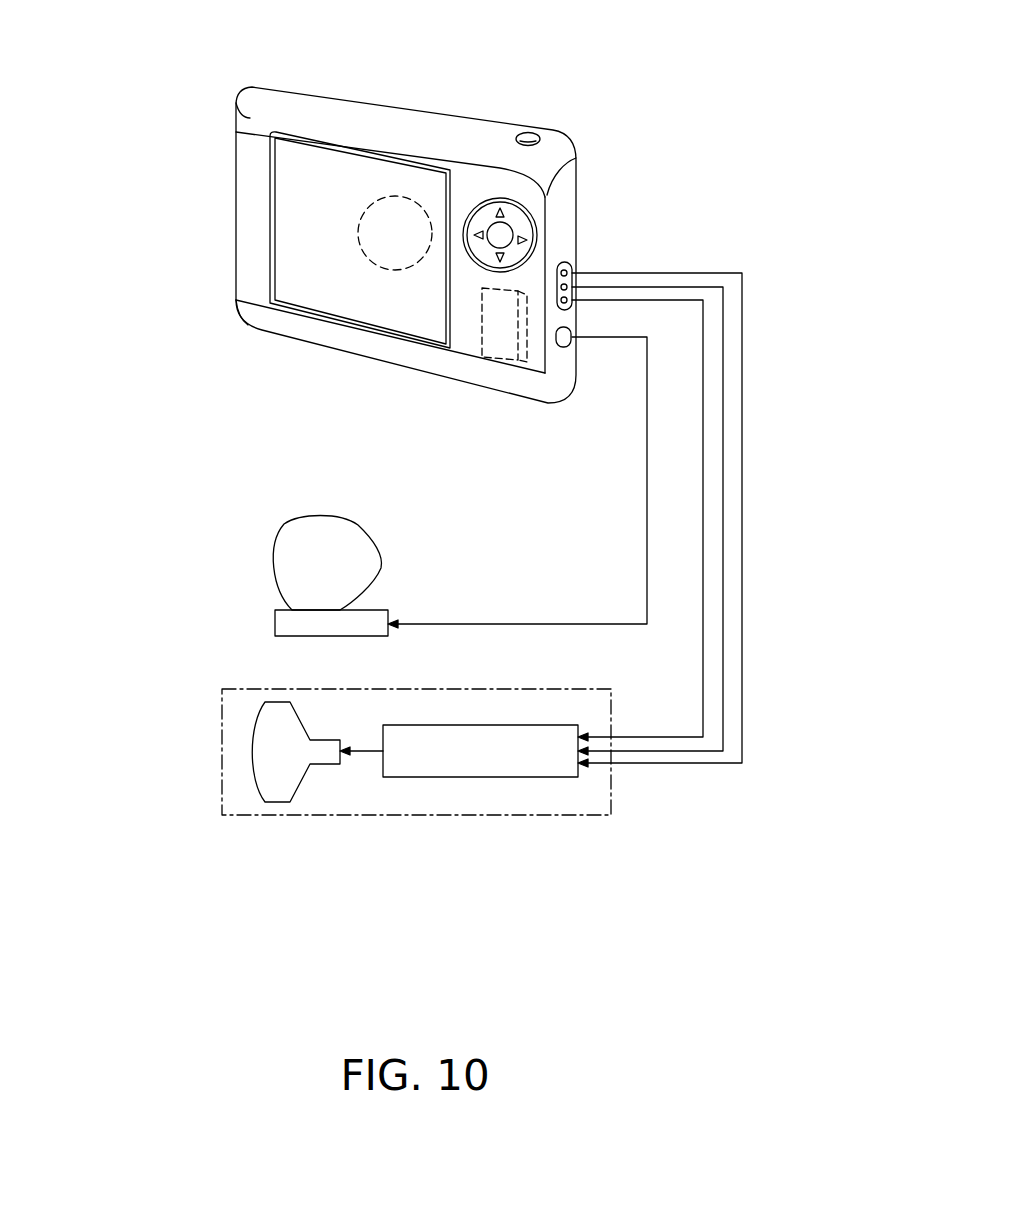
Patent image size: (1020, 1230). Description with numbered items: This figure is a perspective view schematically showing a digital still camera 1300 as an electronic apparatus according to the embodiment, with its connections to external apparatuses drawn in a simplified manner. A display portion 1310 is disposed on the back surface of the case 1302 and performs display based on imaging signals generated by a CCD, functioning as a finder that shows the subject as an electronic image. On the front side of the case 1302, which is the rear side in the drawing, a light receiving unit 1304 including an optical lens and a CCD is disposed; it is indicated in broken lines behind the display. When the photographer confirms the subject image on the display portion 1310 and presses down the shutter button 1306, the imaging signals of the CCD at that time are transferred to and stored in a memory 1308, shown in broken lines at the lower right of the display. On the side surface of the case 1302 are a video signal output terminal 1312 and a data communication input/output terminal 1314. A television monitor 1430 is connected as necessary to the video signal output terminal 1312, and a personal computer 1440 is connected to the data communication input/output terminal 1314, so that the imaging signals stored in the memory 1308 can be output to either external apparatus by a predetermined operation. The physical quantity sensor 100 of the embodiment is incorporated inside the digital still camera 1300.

The digital still camera 1300 is at (497, 82).
The case 1302 is at (248, 114).
The light receiving unit 1304 is at (399, 196).
The shutter button 1306 is at (532, 133).
The memory 1308 is at (503, 342).
The display portion 1310 is at (342, 297).
The video signal output terminal 1312 is at (570, 266).
The data communication input/output terminal 1314 is at (575, 345).
The physical quantity sensor 100 is at (463, 330).
The personal computer 1440 is at (273, 553).
The television monitor 1430 is at (222, 750).